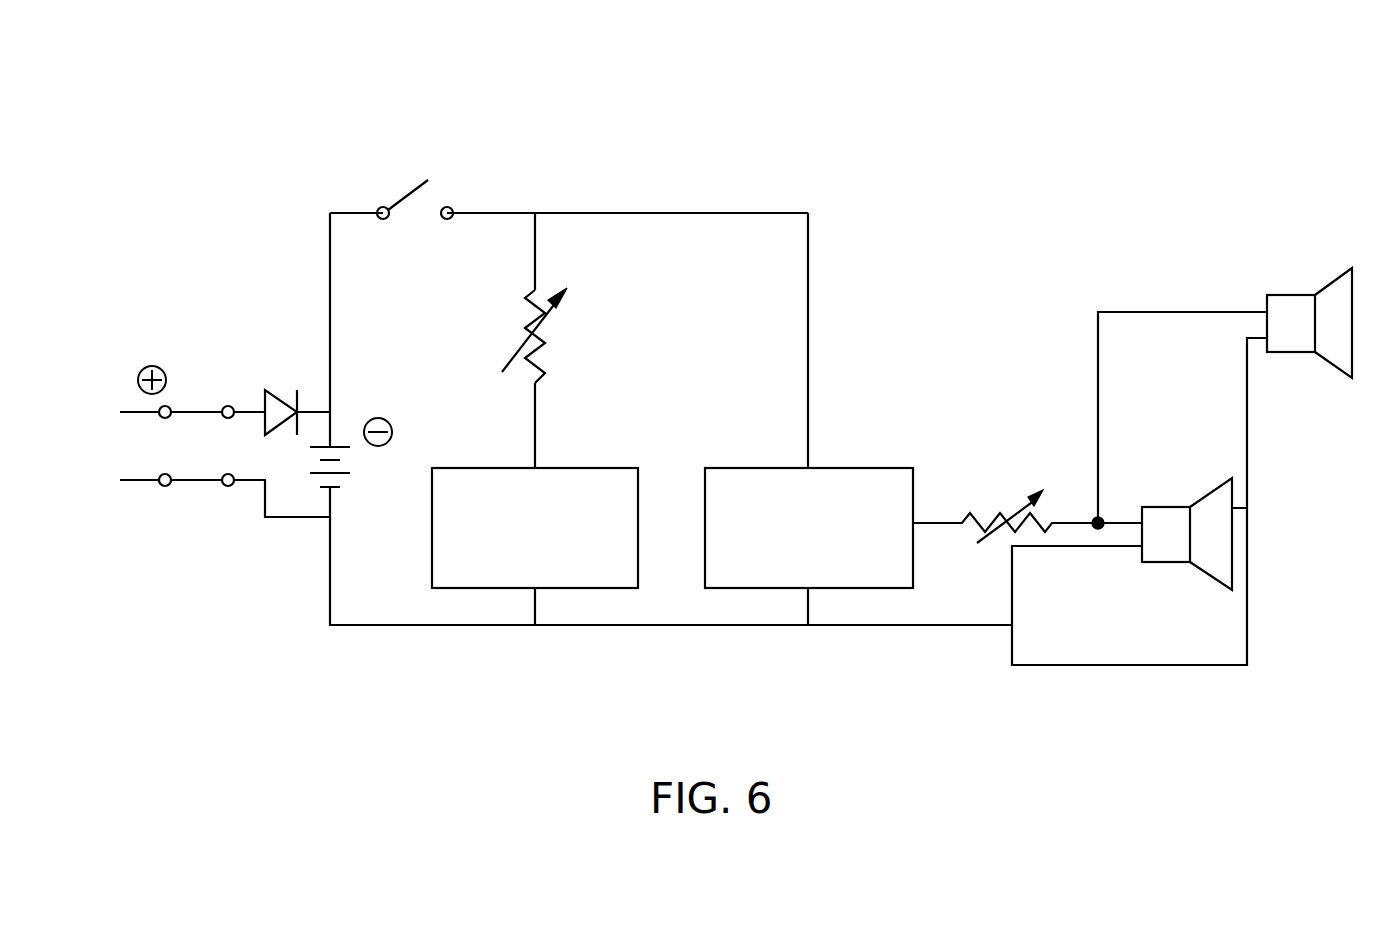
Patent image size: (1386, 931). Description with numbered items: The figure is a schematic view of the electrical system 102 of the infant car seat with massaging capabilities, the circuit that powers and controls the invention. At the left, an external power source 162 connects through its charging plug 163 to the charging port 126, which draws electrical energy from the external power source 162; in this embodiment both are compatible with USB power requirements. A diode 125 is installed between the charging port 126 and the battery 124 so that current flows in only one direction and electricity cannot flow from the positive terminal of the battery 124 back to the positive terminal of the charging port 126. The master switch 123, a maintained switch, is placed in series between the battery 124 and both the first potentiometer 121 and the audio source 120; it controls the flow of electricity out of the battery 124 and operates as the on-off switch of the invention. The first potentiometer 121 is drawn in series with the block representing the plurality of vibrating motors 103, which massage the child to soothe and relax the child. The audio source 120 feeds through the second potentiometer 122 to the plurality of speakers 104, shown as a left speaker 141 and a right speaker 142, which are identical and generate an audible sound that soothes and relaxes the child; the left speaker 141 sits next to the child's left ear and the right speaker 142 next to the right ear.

The electrical system 102 is at (216, 146).
The plurality of vibrating motors 103 is at (585, 468).
The plurality of speakers 104 is at (1300, 352).
The audio source 120 is at (850, 468).
The first potentiometer 121 is at (545, 345).
The second potentiometer 122 is at (985, 515).
The master switch 123 is at (428, 180).
The battery 124 is at (357, 466).
The diode 125 is at (278, 388).
The charging port 126 is at (228, 486).
The left speaker 141 is at (1352, 300).
The right speaker 142 is at (1232, 543).
The external power source 162 is at (240, 415).
The charging plug 163 is at (165, 486).